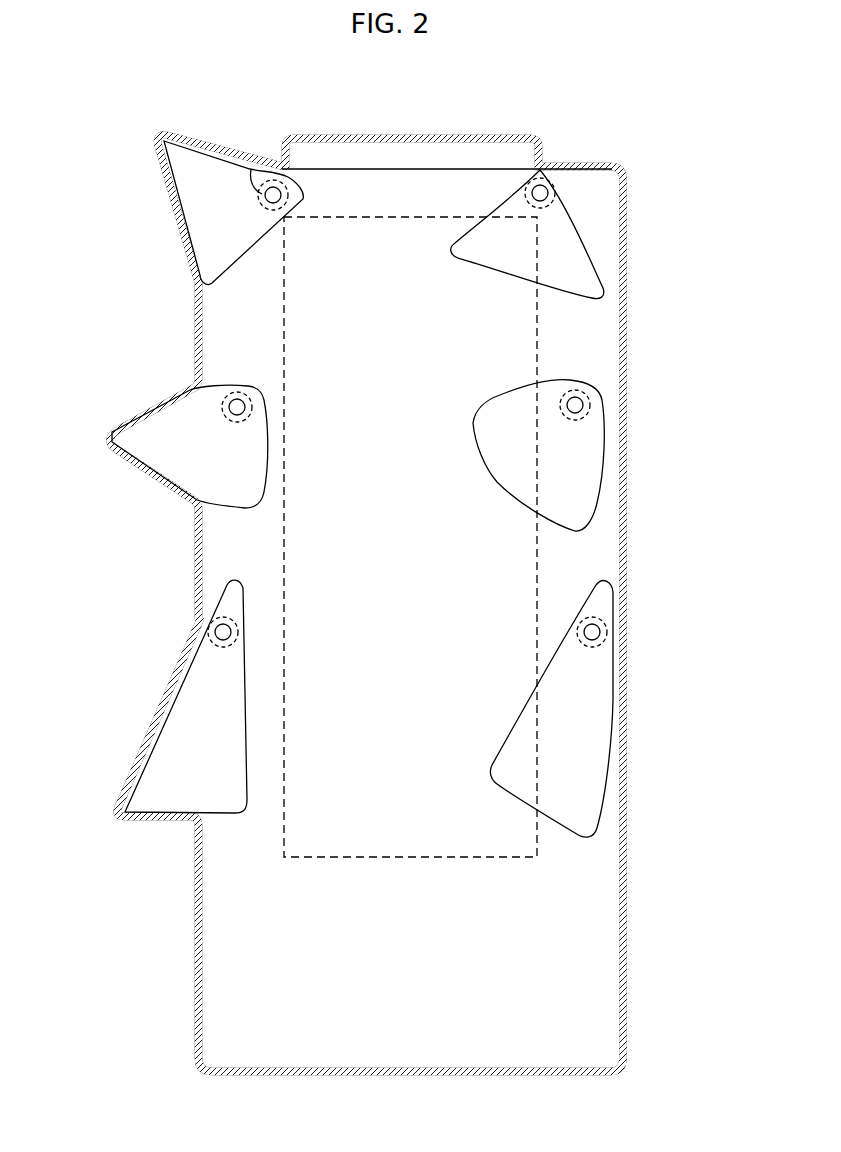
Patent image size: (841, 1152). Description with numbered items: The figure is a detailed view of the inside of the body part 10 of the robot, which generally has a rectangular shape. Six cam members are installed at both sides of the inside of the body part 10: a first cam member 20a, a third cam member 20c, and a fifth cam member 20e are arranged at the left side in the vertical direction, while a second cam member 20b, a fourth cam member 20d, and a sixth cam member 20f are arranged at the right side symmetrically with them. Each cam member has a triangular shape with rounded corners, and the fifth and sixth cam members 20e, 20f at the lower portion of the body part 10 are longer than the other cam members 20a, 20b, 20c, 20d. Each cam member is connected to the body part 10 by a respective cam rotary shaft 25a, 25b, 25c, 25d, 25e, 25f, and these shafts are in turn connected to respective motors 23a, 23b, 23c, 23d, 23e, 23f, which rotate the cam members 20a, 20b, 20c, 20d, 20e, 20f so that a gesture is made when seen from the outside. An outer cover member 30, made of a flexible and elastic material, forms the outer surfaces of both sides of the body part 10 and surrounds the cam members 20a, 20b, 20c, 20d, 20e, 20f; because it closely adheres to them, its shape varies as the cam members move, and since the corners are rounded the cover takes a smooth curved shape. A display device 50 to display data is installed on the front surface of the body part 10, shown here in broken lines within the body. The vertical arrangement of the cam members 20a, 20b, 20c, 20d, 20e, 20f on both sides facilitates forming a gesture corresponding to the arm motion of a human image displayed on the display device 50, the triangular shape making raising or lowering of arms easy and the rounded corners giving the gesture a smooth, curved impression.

The body part 10 is at (647, 1027).
The first cam member 20a is at (178, 188).
The second cam member 20b is at (580, 273).
The third cam member 20c is at (177, 410).
The fourth cam member 20d is at (587, 457).
The fifth cam member 20e is at (186, 686).
The sixth cam member 20f is at (596, 741).
The motor 23a is at (289, 184).
The motor 23b is at (552, 212).
The motor 23c is at (237, 423).
The motor 23d is at (584, 420).
The motor 23e is at (224, 617).
The motor 23f is at (602, 615).
The cam rotary shaft 25a is at (272, 192).
The cam rotary shaft 25b is at (542, 193).
The cam rotary shaft 25c is at (234, 399).
The cam rotary shaft 25d is at (576, 405).
The cam rotary shaft 25e is at (222, 632).
The cam rotary shaft 25f is at (594, 629).
The outer cover member 30 is at (196, 533).
The display device 50 is at (453, 857).